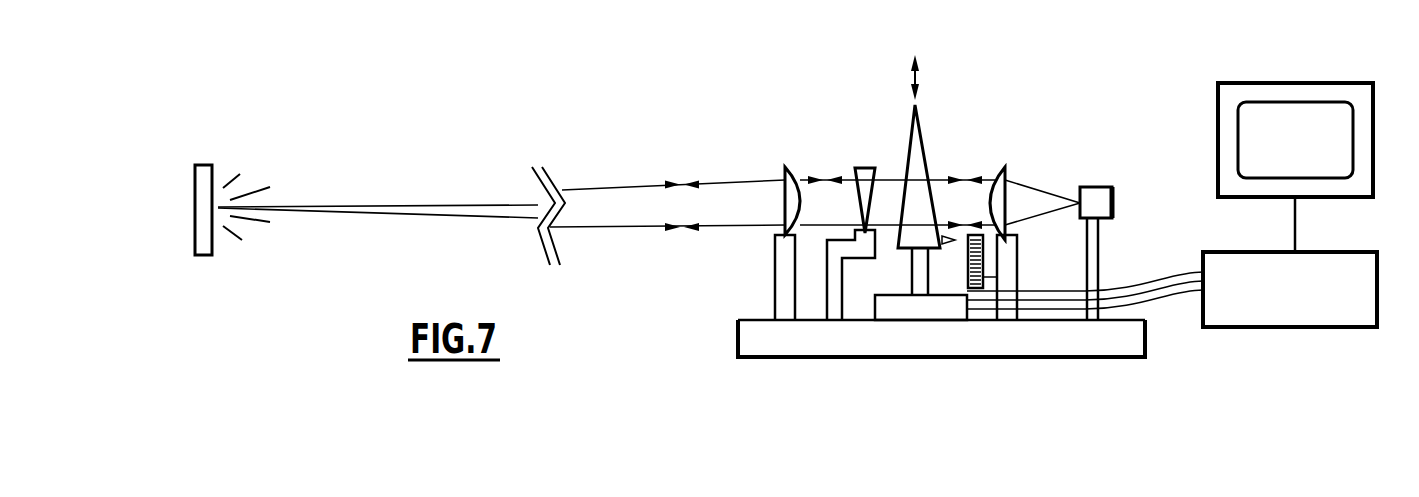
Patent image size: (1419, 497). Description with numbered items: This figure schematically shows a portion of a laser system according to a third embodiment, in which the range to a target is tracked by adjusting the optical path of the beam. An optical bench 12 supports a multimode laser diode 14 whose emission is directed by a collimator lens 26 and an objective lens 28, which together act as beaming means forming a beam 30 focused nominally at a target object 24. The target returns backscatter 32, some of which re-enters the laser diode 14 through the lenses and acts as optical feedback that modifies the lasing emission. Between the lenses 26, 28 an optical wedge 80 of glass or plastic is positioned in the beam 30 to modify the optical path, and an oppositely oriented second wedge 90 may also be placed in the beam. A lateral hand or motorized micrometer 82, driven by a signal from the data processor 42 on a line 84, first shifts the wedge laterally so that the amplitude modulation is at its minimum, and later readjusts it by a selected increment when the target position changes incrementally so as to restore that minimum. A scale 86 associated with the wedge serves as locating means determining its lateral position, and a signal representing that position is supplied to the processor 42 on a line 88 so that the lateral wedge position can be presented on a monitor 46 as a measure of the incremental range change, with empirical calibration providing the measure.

The optical bench 12 is at (738, 328).
The laser diode 14 is at (1093, 187).
The target object 24 is at (212, 172).
The collimator lens 26 is at (1000, 168).
The objective lens 28 is at (790, 168).
The beam 30 is at (640, 185).
The backscatter 32 is at (262, 225).
The data processor 42 is at (1265, 252).
The monitor 46 is at (1218, 130).
The optical wedge 80 is at (922, 130).
The micrometer 82 is at (920, 322).
The line 84 is at (1105, 290).
The scale 86 is at (985, 262).
The line 88 is at (1162, 297).
The second wedge 90 is at (862, 168).